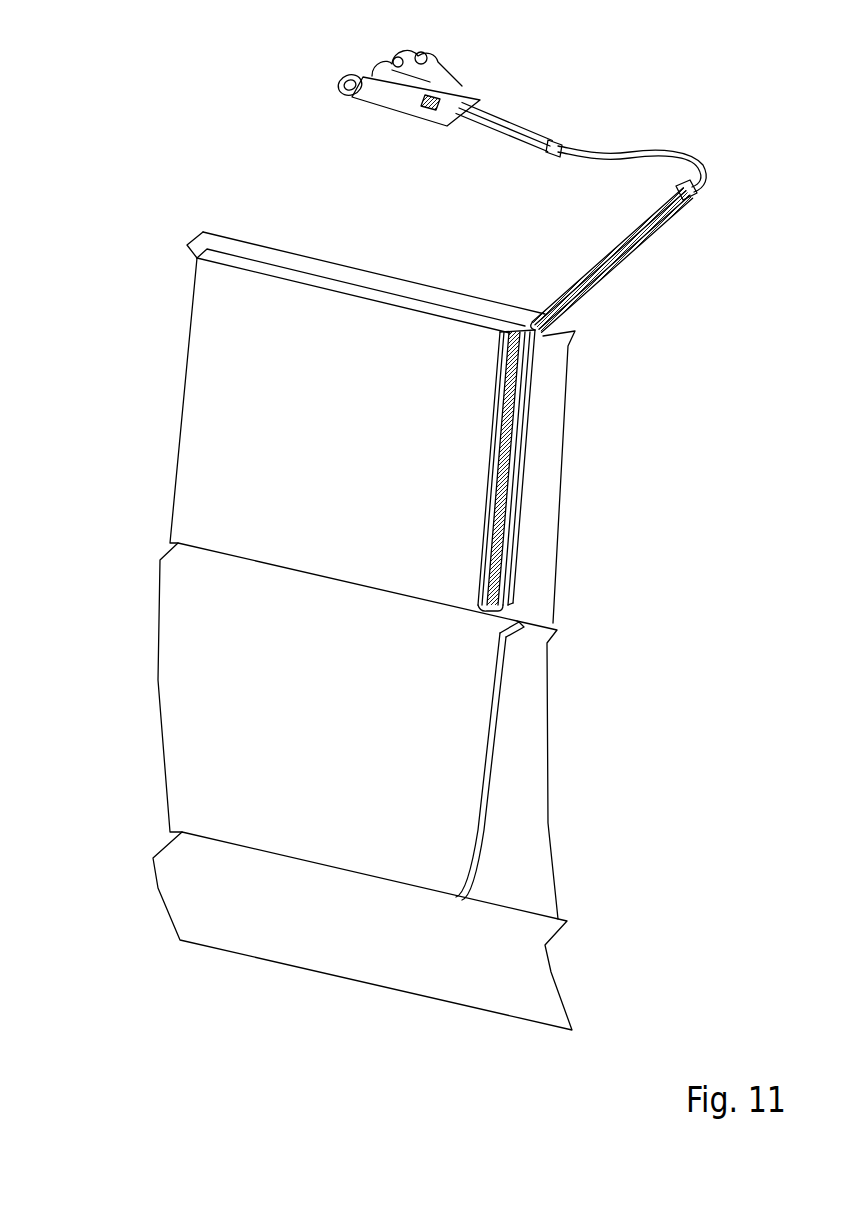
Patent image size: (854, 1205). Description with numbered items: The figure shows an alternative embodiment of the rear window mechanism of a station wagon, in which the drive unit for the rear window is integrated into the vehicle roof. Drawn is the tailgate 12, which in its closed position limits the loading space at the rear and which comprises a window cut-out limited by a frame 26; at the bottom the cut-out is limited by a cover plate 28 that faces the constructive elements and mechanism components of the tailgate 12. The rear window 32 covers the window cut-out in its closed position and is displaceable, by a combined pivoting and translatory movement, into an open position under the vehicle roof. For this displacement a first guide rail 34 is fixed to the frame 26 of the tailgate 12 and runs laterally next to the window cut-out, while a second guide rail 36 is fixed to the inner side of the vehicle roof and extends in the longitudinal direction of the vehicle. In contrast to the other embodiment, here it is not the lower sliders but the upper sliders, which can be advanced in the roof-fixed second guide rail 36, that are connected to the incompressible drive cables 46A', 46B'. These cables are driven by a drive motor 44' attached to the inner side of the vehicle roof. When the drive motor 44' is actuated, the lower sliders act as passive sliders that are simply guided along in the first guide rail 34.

The tailgate 12 is at (485, 808).
The frame 26 is at (497, 610).
The cover plate 28 is at (360, 732).
The rear window 32 is at (368, 462).
The first guide rail 34 is at (528, 420).
The second guide rail 36 is at (603, 287).
The drive motor 44' is at (424, 74).
The incompressible drive cable 46A' is at (630, 136).
The incompressible drive cable 46B' is at (488, 166).